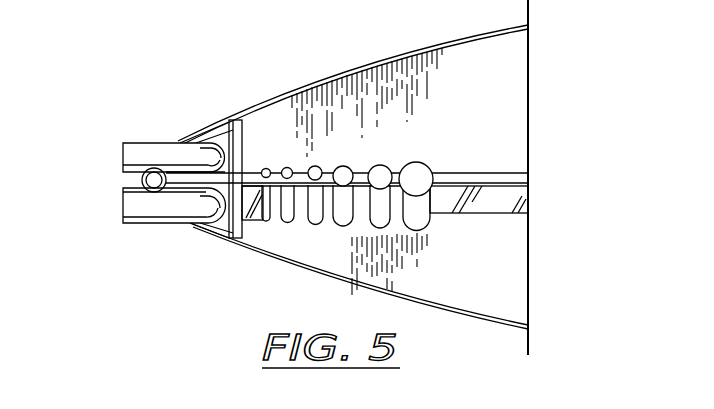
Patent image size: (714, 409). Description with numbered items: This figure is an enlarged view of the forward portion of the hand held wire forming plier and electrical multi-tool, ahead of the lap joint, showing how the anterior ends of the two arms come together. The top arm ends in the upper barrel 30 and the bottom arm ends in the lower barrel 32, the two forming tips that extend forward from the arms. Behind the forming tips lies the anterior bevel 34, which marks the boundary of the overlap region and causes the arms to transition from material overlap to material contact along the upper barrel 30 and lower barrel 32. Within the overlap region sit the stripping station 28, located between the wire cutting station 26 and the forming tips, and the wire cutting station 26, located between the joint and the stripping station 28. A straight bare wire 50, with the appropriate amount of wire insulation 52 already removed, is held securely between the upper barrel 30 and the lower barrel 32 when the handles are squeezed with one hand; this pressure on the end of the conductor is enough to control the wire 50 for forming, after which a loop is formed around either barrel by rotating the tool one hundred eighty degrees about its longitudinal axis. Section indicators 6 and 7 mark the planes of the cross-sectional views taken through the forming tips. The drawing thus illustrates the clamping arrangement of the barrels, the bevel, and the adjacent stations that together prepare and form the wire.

The wire cutting station 26 is at (478, 214).
The stripping station 28 is at (316, 226).
The upper barrel 30 is at (160, 142).
The lower barrel 32 is at (170, 223).
The anterior bevel 34 is at (238, 170).
The bare wire 50 is at (140, 180).
The wire insulation 52 is at (177, 163).
The section line 6- 6 is at (67, 268).
The section line 7- 7 is at (41, 103).